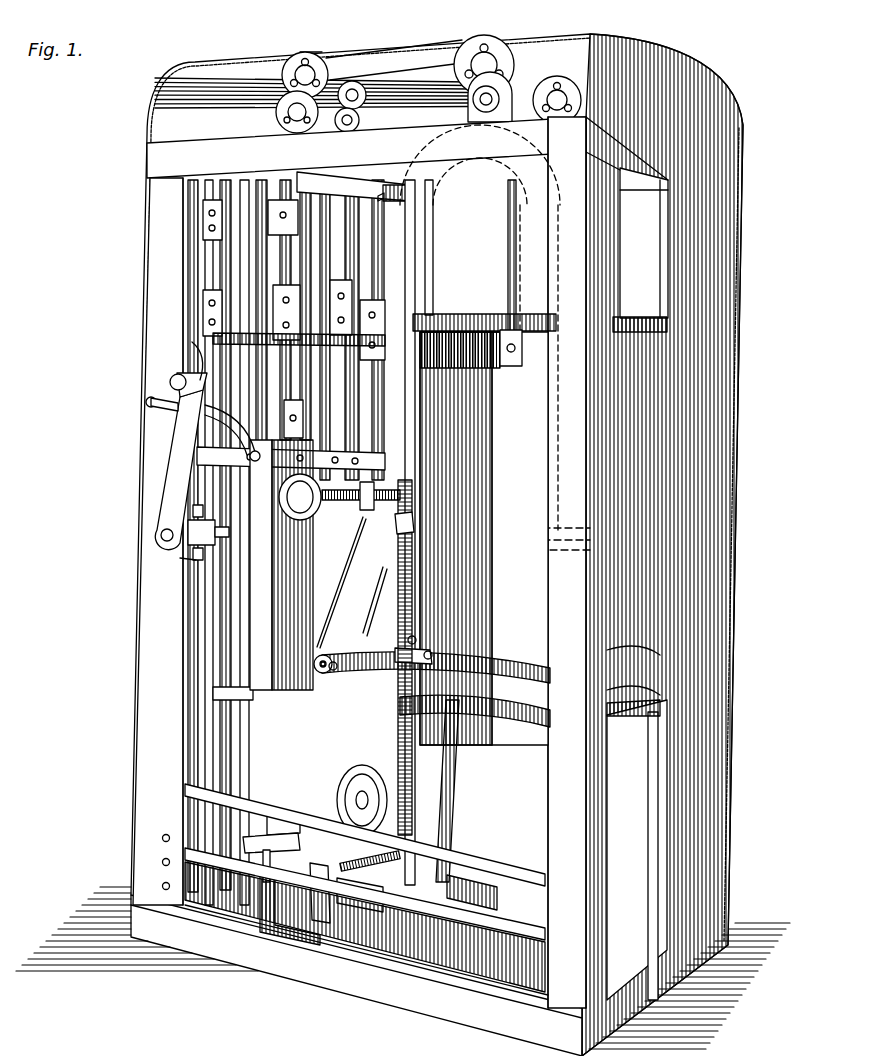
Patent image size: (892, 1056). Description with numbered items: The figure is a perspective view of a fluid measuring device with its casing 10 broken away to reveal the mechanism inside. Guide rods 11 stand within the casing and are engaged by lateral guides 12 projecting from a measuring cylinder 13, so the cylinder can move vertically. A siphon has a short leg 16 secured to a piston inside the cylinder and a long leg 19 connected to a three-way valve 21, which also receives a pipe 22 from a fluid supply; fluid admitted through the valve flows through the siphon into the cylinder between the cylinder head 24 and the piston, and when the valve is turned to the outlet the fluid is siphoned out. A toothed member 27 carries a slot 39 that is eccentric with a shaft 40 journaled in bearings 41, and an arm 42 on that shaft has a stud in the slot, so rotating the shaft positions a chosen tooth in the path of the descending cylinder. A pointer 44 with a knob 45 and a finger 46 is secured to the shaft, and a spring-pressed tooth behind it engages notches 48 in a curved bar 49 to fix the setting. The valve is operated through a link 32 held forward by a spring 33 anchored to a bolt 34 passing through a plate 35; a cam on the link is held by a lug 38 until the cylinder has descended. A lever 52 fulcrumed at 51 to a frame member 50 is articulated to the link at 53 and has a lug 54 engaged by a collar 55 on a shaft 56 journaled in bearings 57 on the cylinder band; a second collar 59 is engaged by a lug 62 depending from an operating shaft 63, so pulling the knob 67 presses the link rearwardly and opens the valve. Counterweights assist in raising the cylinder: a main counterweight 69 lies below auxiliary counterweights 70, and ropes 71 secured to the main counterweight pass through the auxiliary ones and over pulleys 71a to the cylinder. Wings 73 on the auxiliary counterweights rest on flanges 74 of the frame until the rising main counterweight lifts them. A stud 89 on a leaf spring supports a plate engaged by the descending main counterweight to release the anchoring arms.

The casing 10 is at (723, 148).
The guide rods 11 is at (658, 786).
The lateral guides 12 is at (652, 712).
The measuring cylinder 13 is at (495, 435).
The short leg 16 is at (484, 301).
The long leg 19 is at (401, 532).
The three-way valve 21 is at (368, 800).
The pipe 22 is at (355, 808).
The cylinder head 24 is at (499, 718).
The member 27 is at (452, 794).
The link 32 is at (378, 894).
The spring 33 is at (348, 905).
The bolt 34 is at (318, 926).
The plate 35 is at (281, 928).
The lug 38 is at (420, 890).
The slot 39 is at (398, 603).
The shaft 40 is at (193, 532).
The bearings 41 is at (183, 560).
The arm 42 is at (384, 601).
The pointer 44 is at (181, 461).
The knob 45 is at (176, 376).
The finger 46 is at (193, 348).
The notches 48 is at (185, 422).
The curved bar 49 is at (148, 400).
The frame member 50 is at (318, 730).
The fulcrum 51 is at (320, 670).
The lever 52 is at (327, 800).
The articulation 53 is at (310, 830).
The lug 54 is at (396, 523).
The collar 55 is at (455, 644).
The shaft 56 is at (328, 668).
The bearings 57 is at (412, 665).
The second collar 59 is at (416, 640).
The lug 62 is at (368, 545).
The operating shaft 63 is at (378, 497).
The knob 67 is at (300, 497).
The main counterweight 69 is at (280, 565).
The auxiliary counterweights 70 is at (243, 323).
The ropes 71 is at (510, 262).
The pulleys 71a is at (470, 70).
The wings 73 is at (292, 336).
The flanges 74 is at (293, 388).
The stud 89 is at (258, 886).